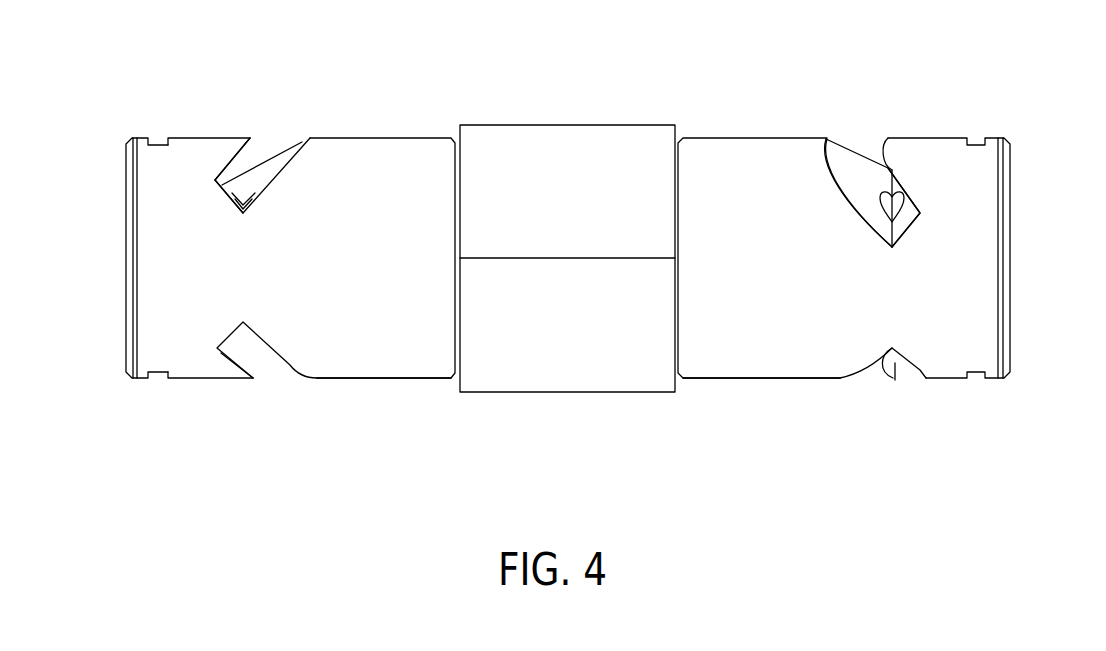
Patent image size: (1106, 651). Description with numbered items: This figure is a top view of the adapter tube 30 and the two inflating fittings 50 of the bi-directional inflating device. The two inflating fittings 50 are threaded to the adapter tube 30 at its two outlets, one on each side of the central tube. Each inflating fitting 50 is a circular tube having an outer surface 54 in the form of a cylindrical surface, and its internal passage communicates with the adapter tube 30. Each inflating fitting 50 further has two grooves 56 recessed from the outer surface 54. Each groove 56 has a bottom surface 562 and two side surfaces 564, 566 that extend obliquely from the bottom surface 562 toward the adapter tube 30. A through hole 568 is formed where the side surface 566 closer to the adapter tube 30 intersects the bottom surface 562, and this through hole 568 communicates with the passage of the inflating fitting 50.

The adapter tube 30 is at (583, 112).
The inflating fitting 50 is at (400, 392).
The outer surface 54 is at (342, 378).
The groove 56 is at (300, 127).
The bottom surface 562 is at (222, 185).
The side surface 564 is at (248, 158).
The side surface 566 is at (282, 165).
The through hole 568 is at (233, 203).